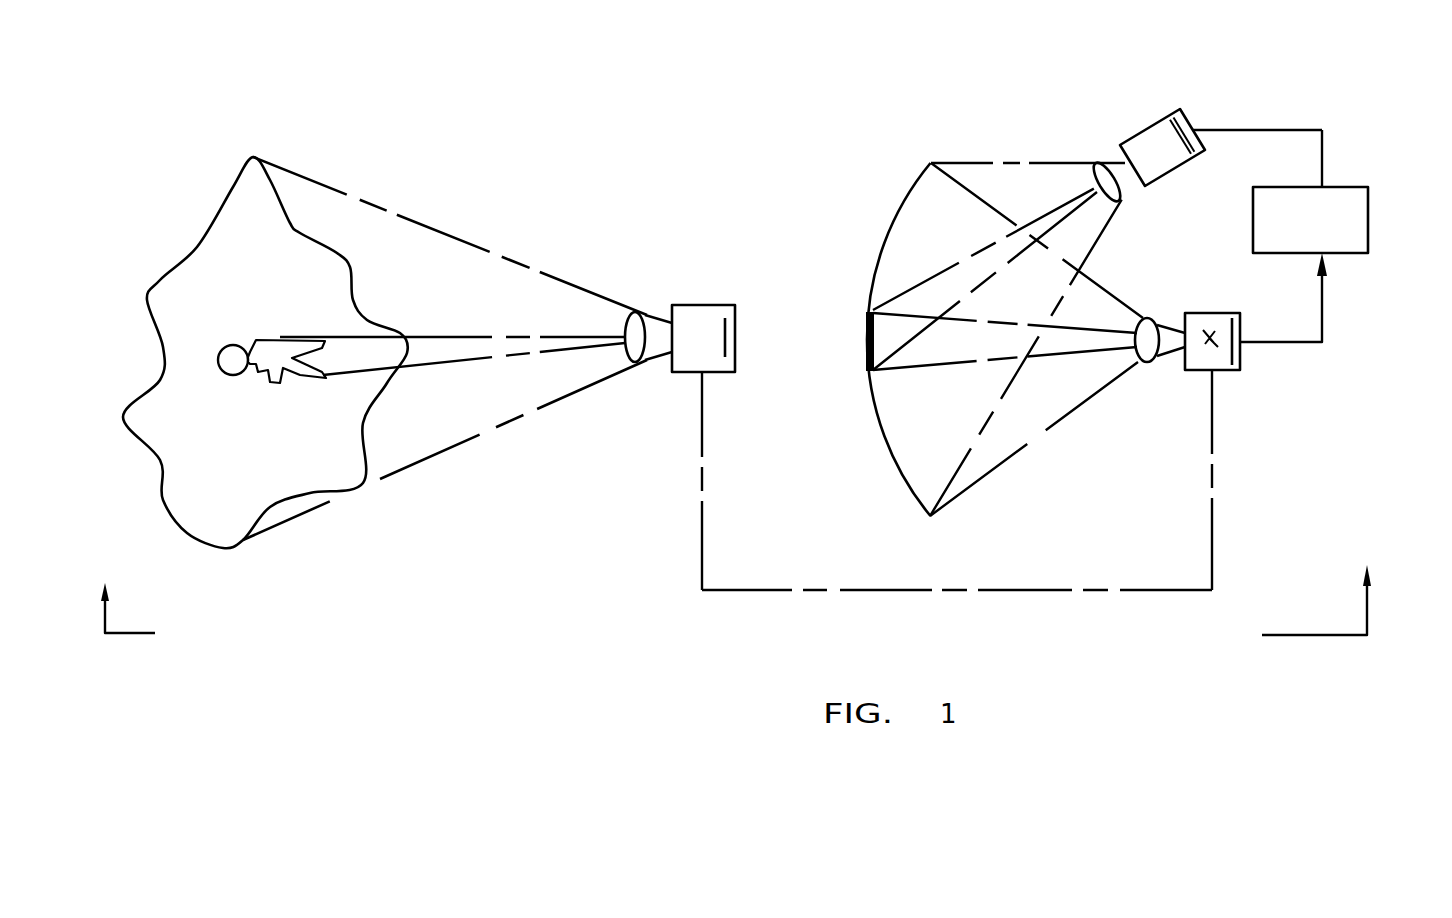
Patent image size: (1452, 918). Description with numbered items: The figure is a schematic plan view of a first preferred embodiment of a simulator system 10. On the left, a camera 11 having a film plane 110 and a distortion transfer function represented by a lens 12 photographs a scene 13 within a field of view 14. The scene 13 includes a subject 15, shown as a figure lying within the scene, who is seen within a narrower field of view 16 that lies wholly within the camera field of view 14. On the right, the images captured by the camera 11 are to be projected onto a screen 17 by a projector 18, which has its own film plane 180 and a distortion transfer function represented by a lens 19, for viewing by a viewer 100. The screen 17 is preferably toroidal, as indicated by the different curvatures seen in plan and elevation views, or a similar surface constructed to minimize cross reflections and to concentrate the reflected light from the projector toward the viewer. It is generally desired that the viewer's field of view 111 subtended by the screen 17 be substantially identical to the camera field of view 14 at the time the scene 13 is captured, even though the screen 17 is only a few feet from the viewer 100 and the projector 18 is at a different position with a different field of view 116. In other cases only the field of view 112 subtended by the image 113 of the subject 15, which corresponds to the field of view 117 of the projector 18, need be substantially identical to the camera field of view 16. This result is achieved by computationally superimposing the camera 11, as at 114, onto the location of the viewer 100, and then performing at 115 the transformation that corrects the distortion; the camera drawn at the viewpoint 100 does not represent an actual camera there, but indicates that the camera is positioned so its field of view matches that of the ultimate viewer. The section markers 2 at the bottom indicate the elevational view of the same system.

The system 10 is at (1032, 72).
The camera 11 is at (687, 352).
The lens 12 is at (644, 315).
The scene 13 is at (227, 193).
The field of view 14 is at (473, 241).
The subject 15 is at (257, 372).
The field of view 16 is at (420, 334).
The screen 17 is at (894, 211).
The projector 18 is at (1150, 126).
The lens 19 is at (1114, 163).
The viewer 100 is at (1217, 328).
The film plane 110 is at (731, 340).
The viewer's field of view 111 is at (1006, 216).
The field of view 112 is at (1043, 326).
The image 113 is at (867, 339).
The superimposition 114 is at (922, 590).
The transformation 115 is at (1370, 200).
The field of view 116 is at (971, 161).
The field of view 117 is at (957, 264).
The film plane 180 is at (1189, 118).
The section line for FIG. 2 is at (741, 600).